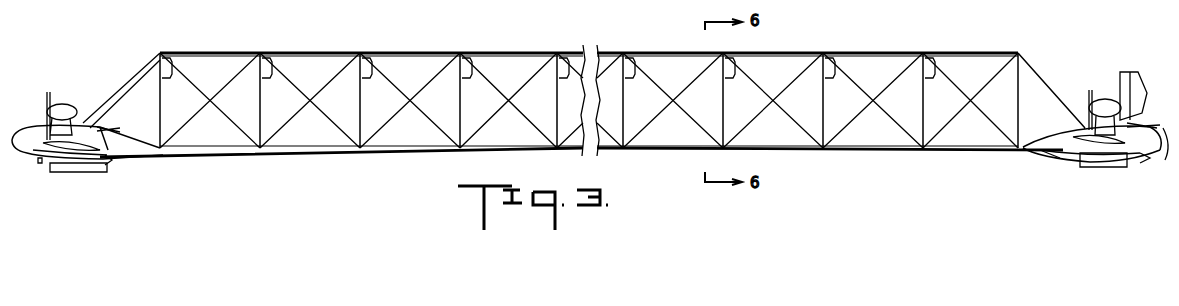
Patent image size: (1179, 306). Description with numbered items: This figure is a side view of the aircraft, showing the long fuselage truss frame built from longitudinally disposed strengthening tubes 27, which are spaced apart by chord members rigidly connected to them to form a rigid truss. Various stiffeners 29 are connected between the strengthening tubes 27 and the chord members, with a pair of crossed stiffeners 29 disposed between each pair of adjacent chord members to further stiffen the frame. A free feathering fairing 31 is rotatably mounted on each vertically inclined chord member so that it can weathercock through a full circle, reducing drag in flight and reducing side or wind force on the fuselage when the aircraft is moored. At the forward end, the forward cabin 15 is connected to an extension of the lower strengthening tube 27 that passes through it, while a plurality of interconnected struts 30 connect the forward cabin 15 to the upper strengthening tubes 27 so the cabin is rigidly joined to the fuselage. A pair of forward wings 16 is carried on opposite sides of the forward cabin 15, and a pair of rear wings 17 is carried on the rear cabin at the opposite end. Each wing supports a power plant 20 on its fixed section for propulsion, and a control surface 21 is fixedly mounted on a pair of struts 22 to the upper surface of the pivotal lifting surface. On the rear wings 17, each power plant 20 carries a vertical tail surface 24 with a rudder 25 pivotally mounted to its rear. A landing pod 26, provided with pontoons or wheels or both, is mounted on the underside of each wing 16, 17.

The forward cabin 15 is at (20, 130).
The forward wings 16 is at (40, 160).
The rear wings 17 is at (1065, 158).
The power plant 20 is at (63, 108).
The control surface 21 is at (107, 128).
The struts 22 is at (110, 158).
The vertical tail surface 24 is at (1120, 82).
The rudder 25 is at (1135, 82).
The landing pod 26 is at (70, 172).
The strengthening tubes 27 is at (226, 52).
The stiffeners 29 is at (330, 80).
The struts 30 is at (128, 70).
The free feathering fairing 31 is at (172, 62).